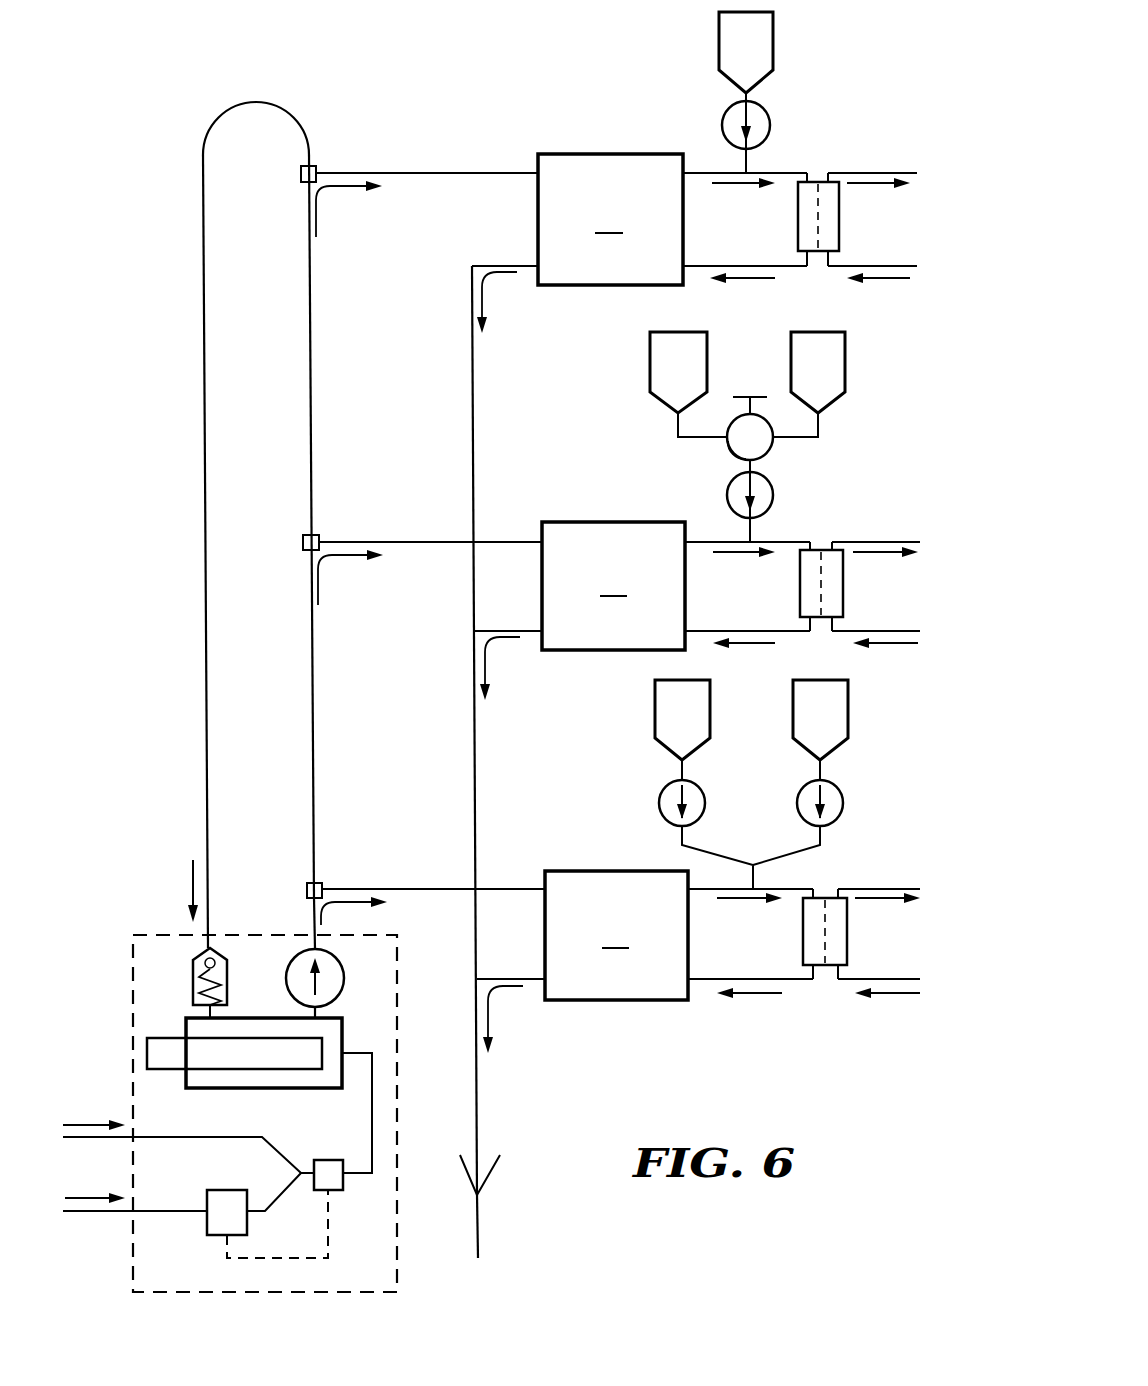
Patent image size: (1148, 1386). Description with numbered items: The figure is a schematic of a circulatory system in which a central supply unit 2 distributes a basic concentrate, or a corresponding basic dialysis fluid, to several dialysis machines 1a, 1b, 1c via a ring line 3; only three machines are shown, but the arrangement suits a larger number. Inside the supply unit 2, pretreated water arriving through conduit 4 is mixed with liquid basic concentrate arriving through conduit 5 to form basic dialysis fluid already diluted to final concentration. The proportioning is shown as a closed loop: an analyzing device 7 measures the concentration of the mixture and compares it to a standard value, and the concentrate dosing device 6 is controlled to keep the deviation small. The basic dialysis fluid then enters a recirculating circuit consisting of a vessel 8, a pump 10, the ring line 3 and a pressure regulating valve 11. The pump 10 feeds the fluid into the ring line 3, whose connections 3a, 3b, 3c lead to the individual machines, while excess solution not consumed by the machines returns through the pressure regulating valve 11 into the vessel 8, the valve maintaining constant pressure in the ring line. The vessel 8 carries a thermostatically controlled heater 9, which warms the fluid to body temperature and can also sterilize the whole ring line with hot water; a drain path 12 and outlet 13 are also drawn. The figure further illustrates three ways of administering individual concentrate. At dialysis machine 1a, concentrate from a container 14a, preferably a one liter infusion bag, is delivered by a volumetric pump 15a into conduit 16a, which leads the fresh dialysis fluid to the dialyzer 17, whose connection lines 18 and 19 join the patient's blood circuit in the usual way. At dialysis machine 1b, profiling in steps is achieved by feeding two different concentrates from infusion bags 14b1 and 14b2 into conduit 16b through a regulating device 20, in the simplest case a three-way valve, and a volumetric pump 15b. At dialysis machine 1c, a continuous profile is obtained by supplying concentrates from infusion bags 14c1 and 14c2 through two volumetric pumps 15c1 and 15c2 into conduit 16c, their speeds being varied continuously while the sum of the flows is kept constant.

The dialysis machine 1a is at (694, 243).
The dialysis machine 1b is at (697, 611).
The dialysis machine 1c is at (698, 962).
The central supply unit 2 is at (374, 1252).
The ring line 3 is at (311, 373).
The connection 3a is at (316, 166).
The connection 3b is at (319, 535).
The connection 3c is at (322, 883).
The conduit 4 is at (150, 1137).
The conduit 5 is at (152, 1215).
The concentrate dosing device 6 is at (207, 1192).
The analyzing device 7 is at (328, 1160).
The vessel 8 is at (262, 1085).
The thermostatically controlled heater 9 is at (147, 1050).
The pump 10 is at (340, 985).
The pressure regulating valve 11 is at (193, 975).
The drain line 12 is at (478, 1100).
The drain outlet 13 is at (478, 1220).
The container 14a is at (773, 42).
The infusion bag 14b1 is at (650, 362).
The infusion bag 14b2 is at (845, 362).
The infusion bag 14c1 is at (655, 718).
The infusion bag 14c2 is at (848, 718).
The volumetric pump 15a is at (769, 112).
The volumetric pump 15b is at (772, 485).
The volumetric pump 15c1 is at (659, 803).
The volumetric pump 15c2 is at (843, 803).
The conduit 16a is at (807, 172).
The conduit 16b is at (810, 542).
The heat exchanger 16c is at (825, 934).
The dialyzer 17 is at (839, 218).
The connection line 18 is at (890, 172).
The connection line 19 is at (900, 265).
The regulating device 20 is at (730, 448).